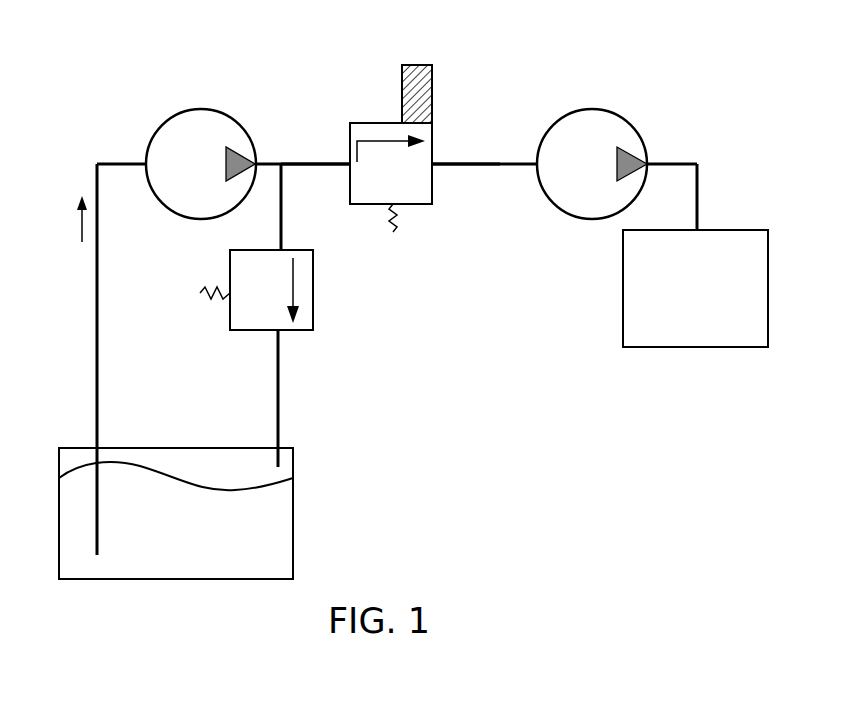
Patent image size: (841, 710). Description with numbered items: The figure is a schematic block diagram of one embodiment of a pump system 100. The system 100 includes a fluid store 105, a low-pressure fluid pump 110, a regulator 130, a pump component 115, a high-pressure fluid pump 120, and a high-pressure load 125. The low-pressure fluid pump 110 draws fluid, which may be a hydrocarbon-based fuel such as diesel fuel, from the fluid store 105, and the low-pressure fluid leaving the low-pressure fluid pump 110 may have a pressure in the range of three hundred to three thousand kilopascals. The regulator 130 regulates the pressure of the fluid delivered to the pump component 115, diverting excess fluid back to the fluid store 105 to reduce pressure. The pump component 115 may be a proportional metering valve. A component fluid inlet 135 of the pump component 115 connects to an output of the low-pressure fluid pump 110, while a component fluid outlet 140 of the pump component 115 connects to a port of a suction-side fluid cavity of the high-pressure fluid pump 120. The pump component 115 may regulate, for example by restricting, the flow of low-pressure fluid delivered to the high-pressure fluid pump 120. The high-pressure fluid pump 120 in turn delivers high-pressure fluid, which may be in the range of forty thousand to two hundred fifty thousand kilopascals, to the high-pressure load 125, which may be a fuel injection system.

The pump system 100 is at (62, 42).
The fluid store 105 is at (192, 534).
The low-pressure fluid pump 110 is at (166, 126).
The pump component 115 is at (352, 124).
The high-pressure fluid pump 120 is at (556, 122).
The high-pressure load 125 is at (712, 321).
The regulator 130 is at (314, 292).
The component fluid inlet 135 is at (318, 162).
The component fluid outlet 140 is at (478, 162).